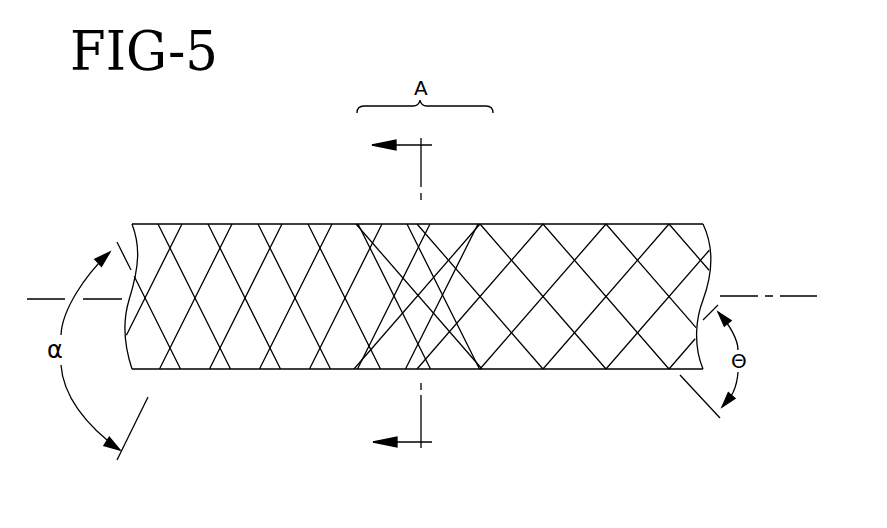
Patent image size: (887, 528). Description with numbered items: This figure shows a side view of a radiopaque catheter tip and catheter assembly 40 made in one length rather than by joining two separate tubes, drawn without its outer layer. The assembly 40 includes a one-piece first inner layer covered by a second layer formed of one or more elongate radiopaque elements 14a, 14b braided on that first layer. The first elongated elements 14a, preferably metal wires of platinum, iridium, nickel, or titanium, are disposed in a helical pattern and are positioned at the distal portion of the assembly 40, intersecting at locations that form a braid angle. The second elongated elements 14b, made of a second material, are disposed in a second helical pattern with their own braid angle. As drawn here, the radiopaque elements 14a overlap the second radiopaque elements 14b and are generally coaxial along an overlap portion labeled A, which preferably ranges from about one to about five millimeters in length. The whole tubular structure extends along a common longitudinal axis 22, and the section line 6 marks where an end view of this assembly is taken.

The radiopaque catheter tip and catheter assembly 40 is at (418, 260).
The elongated elements 14a is at (380, 323).
The second elongated elements 14b is at (437, 342).
The longitudinal axis 22 is at (803, 297).
The section line 6- 6 is at (410, 293).